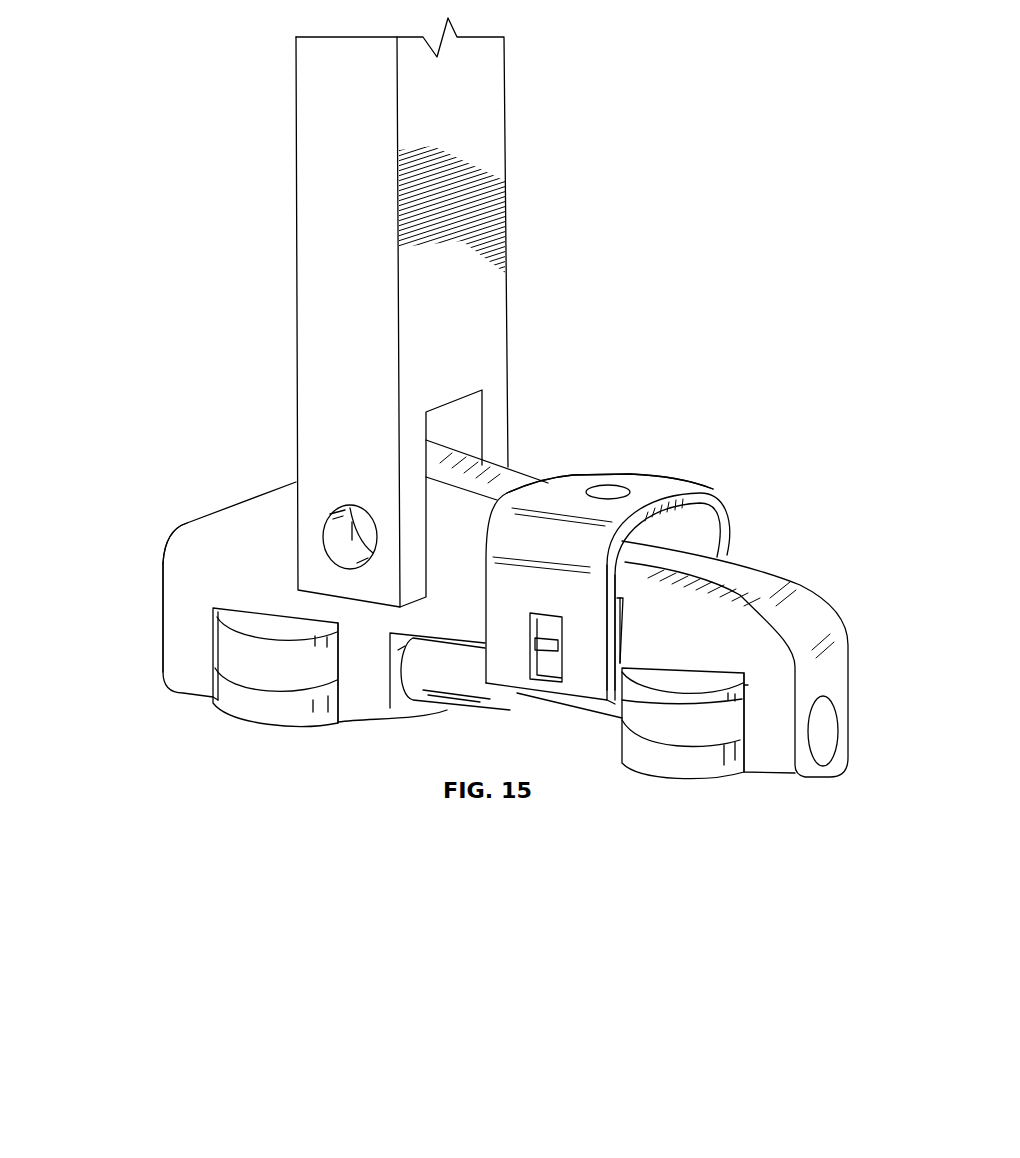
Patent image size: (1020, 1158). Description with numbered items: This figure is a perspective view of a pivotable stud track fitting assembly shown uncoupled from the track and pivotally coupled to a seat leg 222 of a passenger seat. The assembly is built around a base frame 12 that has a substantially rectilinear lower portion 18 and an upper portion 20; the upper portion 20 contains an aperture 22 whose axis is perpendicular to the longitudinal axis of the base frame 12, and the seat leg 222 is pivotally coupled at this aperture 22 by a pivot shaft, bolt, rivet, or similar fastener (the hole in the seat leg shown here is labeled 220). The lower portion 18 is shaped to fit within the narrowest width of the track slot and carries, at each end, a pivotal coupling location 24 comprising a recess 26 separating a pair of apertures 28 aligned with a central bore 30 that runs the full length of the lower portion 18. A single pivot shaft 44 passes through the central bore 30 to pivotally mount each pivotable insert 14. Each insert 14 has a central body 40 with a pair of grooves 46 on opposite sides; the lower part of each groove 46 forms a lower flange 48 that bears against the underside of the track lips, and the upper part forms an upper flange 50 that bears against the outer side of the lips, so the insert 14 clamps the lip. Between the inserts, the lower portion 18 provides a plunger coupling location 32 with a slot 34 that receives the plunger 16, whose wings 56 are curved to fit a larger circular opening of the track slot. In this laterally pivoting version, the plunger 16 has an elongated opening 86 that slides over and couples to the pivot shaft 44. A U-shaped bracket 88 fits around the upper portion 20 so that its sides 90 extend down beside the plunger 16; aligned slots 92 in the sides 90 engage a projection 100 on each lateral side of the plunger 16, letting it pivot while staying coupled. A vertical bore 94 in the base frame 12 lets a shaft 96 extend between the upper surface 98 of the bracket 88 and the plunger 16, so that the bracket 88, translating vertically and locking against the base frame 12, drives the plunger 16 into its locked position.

The base frame 12 is at (205, 567).
The pivotable insert 14 is at (228, 700).
The plunger 16 is at (590, 710).
The lower portion 18 is at (177, 640).
The upper portion 20 is at (183, 523).
The aperture 22 is at (367, 535).
The pivotal coupling location 24 is at (340, 628).
The recess 26 is at (264, 613).
The apertures 28 is at (398, 668).
The central bore 30 is at (838, 715).
The plunger coupling location 32 is at (593, 665).
The slot 34 is at (620, 643).
The central body 40 is at (270, 665).
The pivot shaft 44 is at (452, 668).
The grooves 46 is at (238, 652).
The lower flange 48 is at (280, 702).
The upper flange 50 is at (307, 642).
The wings 56 is at (555, 710).
The opening 86 is at (517, 690).
The bracket 88 is at (583, 473).
The sides 90 is at (553, 567).
The slots 92 is at (580, 653).
The vertical bore 94 is at (587, 492).
The shaft 96 is at (622, 488).
The upper surface 98 is at (643, 487).
The projection 100 is at (537, 643).
The post hole 220 is at (332, 513).
The seat leg 222 is at (480, 130).